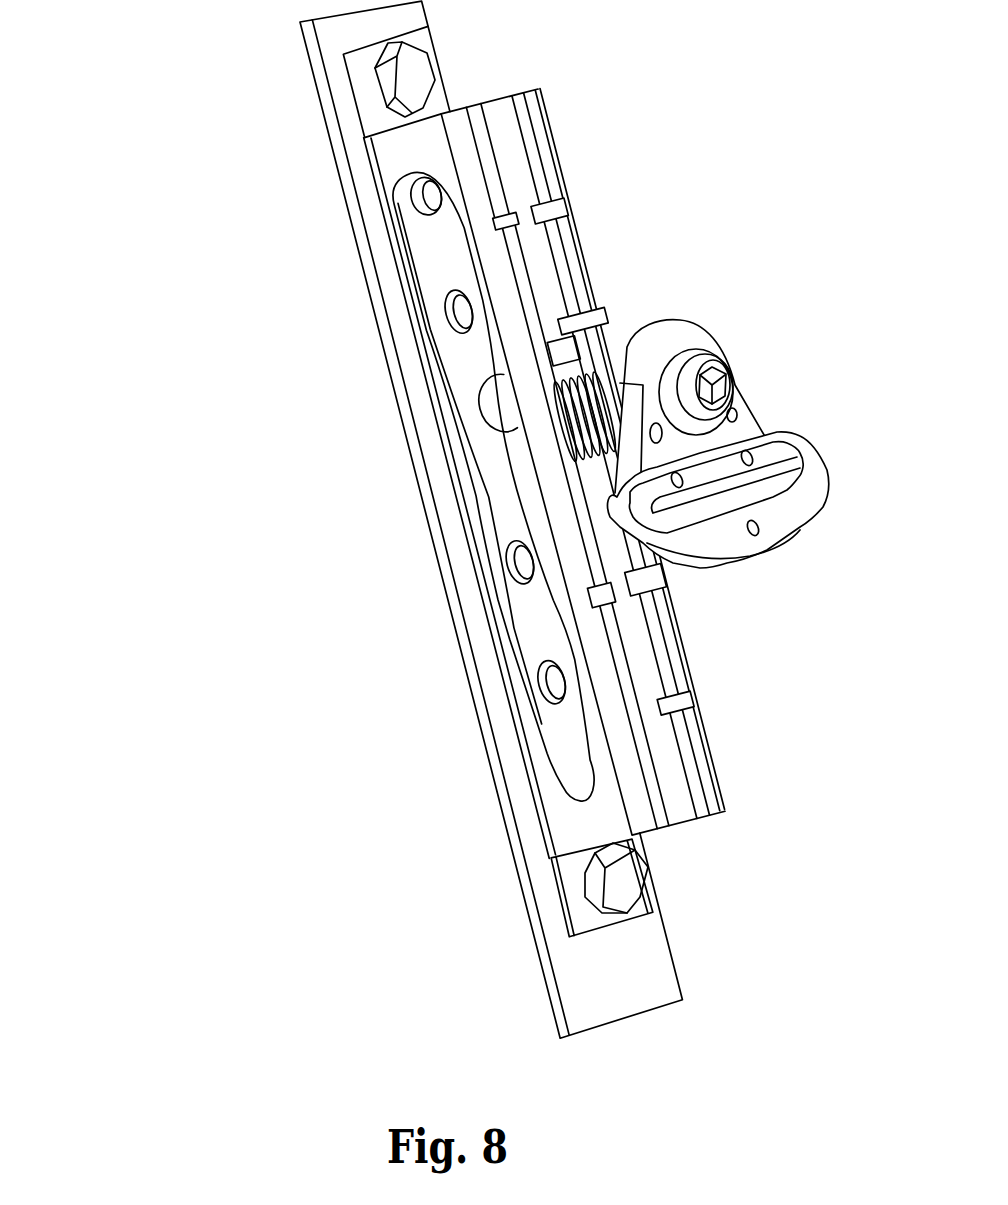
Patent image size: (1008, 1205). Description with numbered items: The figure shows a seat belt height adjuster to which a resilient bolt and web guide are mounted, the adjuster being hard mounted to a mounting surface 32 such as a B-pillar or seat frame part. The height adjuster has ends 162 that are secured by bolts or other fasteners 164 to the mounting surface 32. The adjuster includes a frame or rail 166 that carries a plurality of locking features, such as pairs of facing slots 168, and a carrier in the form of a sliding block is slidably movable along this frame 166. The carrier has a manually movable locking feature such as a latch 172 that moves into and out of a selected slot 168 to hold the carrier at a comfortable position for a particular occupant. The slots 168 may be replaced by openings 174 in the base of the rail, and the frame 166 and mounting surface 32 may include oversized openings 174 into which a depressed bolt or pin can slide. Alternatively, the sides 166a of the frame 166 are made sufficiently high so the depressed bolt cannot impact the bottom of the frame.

The mounting surface 32 is at (652, 968).
The ends 162 is at (657, 897).
The fasteners 164 is at (417, 77).
The frame 166 is at (572, 817).
The sides of the frame 166a is at (668, 753).
The slots 168 is at (562, 200).
The latch 172 is at (608, 318).
The openings 174 is at (412, 202).